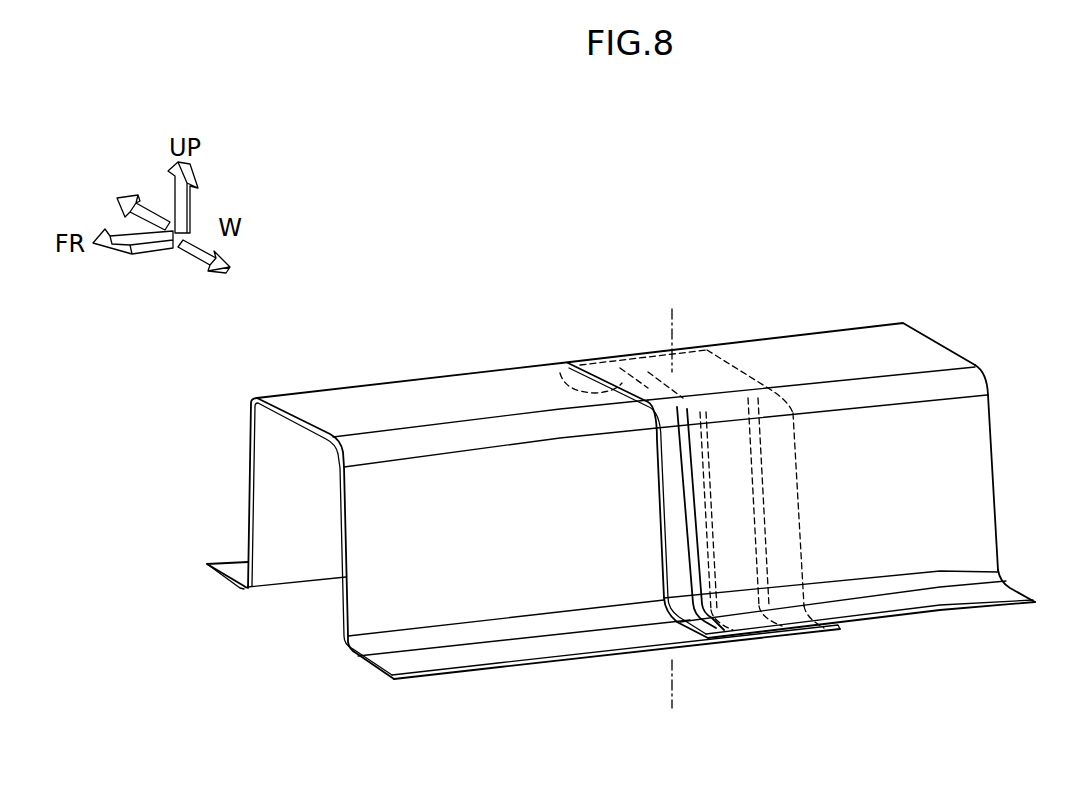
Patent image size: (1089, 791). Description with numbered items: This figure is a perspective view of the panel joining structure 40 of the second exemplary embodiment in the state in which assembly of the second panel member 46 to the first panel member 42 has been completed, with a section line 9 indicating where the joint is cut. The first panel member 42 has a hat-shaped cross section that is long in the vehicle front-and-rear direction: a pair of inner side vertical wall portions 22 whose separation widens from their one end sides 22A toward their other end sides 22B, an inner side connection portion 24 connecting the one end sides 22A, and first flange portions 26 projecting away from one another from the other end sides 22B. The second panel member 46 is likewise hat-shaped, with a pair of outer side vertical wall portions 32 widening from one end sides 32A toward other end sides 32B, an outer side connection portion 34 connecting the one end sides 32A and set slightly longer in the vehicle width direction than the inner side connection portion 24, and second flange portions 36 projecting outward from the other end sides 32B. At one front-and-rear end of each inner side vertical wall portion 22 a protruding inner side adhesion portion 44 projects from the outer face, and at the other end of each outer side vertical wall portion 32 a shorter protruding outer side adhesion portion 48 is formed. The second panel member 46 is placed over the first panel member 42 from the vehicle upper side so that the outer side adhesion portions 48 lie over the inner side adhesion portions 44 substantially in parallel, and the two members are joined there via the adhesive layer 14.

The section line 9- 9 is at (672, 292).
The adhesive layer 14 is at (560, 373).
The inner side vertical wall portion 22 is at (370, 601).
The one end side 22A is at (368, 449).
The other end side 22B is at (380, 643).
The inner side connection portion 24 is at (395, 400).
The first flange portion 26 is at (232, 570).
The outer side vertical wall portion 32 is at (975, 470).
The one end side 32A is at (965, 378).
The other end side 32B is at (992, 580).
The outer side connection portion 34 is at (804, 352).
The second flange portion 36 is at (917, 603).
The panel joining structure 40 is at (1029, 297).
The first panel member 42 is at (334, 387).
The inner side adhesion portion 44 is at (690, 518).
The second panel member 46 is at (878, 326).
The outer side adhesion portion 48 is at (733, 547).